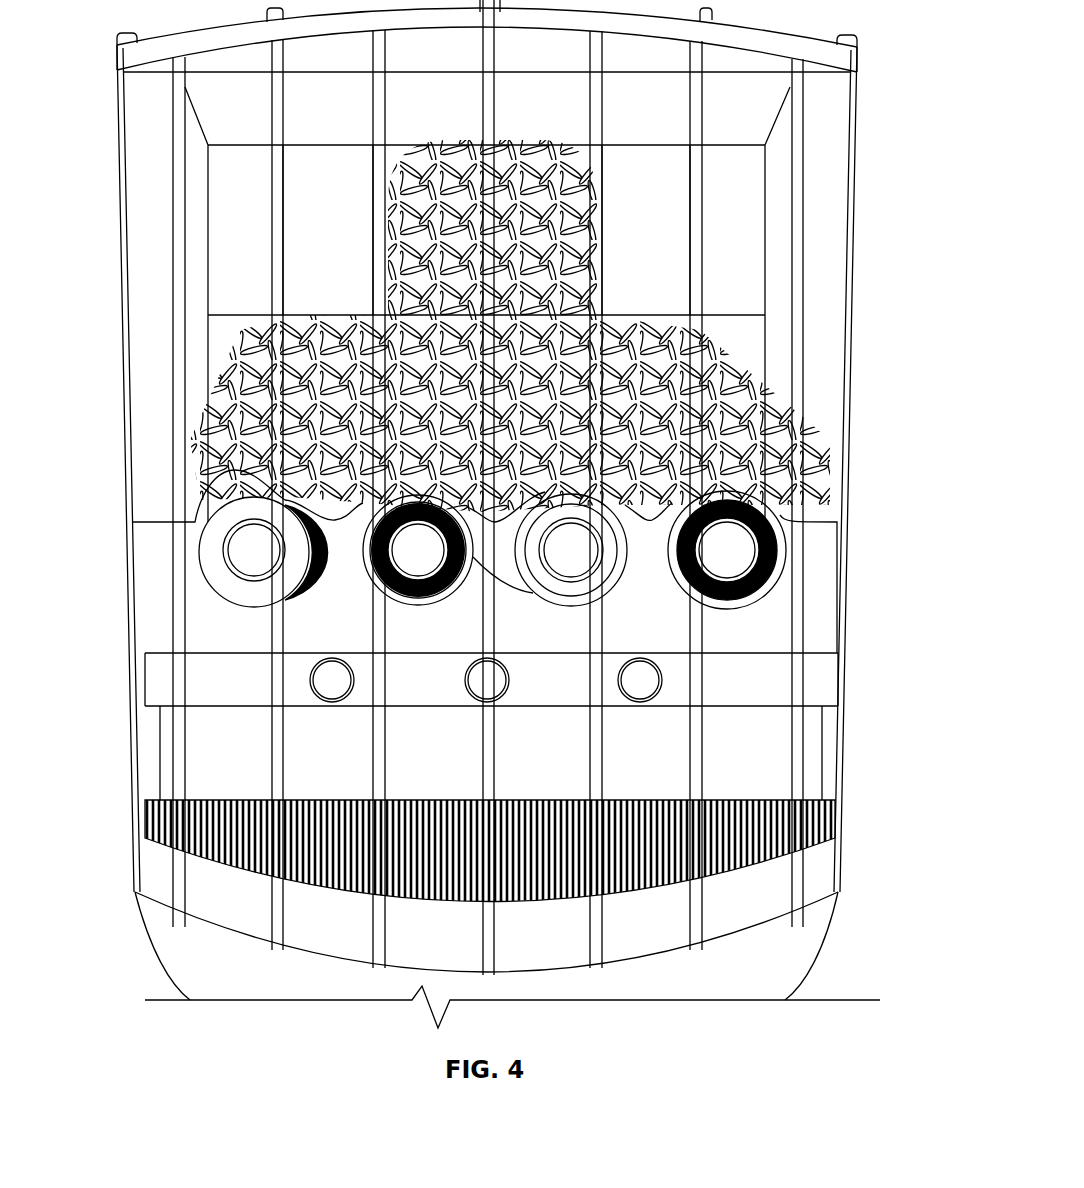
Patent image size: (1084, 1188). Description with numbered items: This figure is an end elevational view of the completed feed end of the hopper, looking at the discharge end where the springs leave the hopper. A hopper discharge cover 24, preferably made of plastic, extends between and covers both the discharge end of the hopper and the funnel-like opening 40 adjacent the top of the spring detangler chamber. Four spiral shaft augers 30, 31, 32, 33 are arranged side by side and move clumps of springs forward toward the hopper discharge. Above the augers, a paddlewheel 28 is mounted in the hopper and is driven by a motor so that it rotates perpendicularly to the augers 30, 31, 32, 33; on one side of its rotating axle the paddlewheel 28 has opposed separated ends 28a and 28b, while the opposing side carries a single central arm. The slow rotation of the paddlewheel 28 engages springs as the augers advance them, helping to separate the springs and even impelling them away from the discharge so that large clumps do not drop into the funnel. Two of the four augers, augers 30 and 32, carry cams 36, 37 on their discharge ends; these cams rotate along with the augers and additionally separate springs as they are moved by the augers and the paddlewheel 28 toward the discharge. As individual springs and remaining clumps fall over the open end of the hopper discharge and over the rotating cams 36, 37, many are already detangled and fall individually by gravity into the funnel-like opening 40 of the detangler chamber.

The hopper discharge cover 24 is at (818, 277).
The paddlewheel 28 is at (232, 205).
The opposed separated end 28a is at (364, 232).
The opposed separated end 28b is at (679, 232).
The auger 30 is at (253, 555).
The auger 31 is at (413, 558).
The auger 32 is at (575, 562).
The auger 33 is at (720, 560).
The cam 36 is at (174, 488).
The cam 37 is at (503, 560).
The funnel-like opening 40 is at (818, 940).